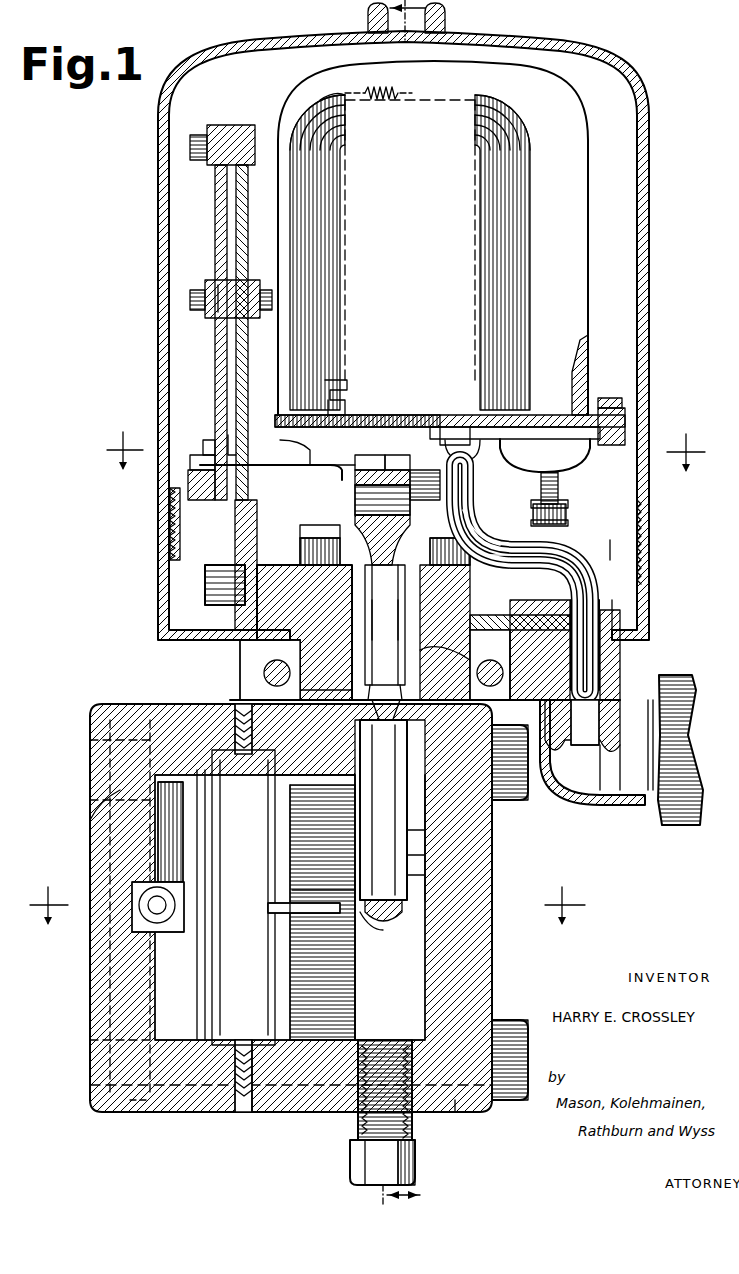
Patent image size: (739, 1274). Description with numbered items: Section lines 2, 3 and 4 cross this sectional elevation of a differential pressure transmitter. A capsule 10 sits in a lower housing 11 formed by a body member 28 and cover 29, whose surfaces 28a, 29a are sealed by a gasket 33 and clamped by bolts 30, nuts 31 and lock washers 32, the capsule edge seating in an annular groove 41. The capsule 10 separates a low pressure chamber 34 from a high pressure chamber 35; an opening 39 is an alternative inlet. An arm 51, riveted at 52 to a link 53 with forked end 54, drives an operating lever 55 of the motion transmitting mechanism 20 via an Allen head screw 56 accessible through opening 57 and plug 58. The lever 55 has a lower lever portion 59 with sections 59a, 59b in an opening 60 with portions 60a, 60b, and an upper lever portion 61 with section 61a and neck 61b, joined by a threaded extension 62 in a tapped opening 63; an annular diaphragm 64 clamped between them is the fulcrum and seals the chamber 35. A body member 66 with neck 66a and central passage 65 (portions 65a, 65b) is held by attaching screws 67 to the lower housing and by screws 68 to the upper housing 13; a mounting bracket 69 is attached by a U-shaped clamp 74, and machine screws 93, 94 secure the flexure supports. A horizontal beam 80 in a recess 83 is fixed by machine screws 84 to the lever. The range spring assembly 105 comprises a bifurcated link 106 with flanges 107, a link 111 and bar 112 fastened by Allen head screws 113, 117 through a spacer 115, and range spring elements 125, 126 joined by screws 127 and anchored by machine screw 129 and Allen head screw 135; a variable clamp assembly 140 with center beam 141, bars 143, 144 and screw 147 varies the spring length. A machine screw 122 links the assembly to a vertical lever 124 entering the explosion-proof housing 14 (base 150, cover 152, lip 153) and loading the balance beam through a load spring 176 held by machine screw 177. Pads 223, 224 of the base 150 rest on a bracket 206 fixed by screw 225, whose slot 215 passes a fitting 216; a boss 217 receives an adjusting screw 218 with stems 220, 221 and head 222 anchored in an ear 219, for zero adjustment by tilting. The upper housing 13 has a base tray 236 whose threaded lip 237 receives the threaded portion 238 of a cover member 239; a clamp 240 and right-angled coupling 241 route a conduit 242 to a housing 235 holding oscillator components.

The section line 2- 2 is at (392, 602).
The section line 3- 3 is at (399, 452).
The section line 4- 4 is at (306, 910).
The differential pressure responsive capsule 10 is at (275, 838).
The lower housing 11 is at (496, 879).
The upper housing 13 is at (640, 300).
The explosion-proof housing 14 is at (592, 225).
The motion transmitting mechanism 20 is at (462, 500).
The body member 28 is at (482, 912).
The adjacent surface of body member 28a is at (252, 1112).
The cover 29 is at (100, 830).
The adjacent surface of cover 29a is at (215, 1112).
The bolts 30 is at (95, 740).
The nuts 31 is at (500, 802).
The lock washers 32 is at (458, 1105).
The annular gasket 33 is at (242, 1112).
The first pressure chamber 34 is at (171, 832).
The second pressure chamber 35 is at (322, 912).
The opening 39 is at (447, 632).
The annular groove 41 is at (205, 1112).
The arm 51 is at (300, 913).
The rivet connection 52 is at (340, 905).
The link 53 is at (330, 913).
The forked end 54 is at (403, 925).
The operating lever 55 is at (409, 835).
The Allen head screw 56 is at (378, 930).
The opening 57 is at (385, 1040).
The removable plug 58 is at (416, 1162).
The lower lever portion 59 is at (412, 882).
The large diameter section 59a is at (415, 858).
The smaller diameter section 59b is at (430, 672).
The opening 60 is at (426, 790).
The large diameter portion 60a is at (315, 789).
The small diameter portion 60b is at (345, 700).
The upper lever portion 61 is at (365, 545).
The large diameter section 61a is at (480, 615).
The neck 61b is at (374, 685).
The threaded axial extension 62 is at (383, 810).
The tapped opening 63 is at (358, 805).
The sealing diaphragm 64 is at (478, 645).
The central passage 65 is at (355, 610).
The narrow portion 65a is at (390, 660).
The larger diameter portion 65b is at (352, 618).
The body member 66 is at (304, 632).
The neck 66a is at (200, 688).
The attaching screws 67 is at (300, 553).
The screws 68 is at (262, 660).
The mounting bracket 69 is at (234, 690).
The U-shaped clamp 74 is at (263, 675).
The horizontal beam 80 is at (398, 459).
The recess 83 is at (355, 500).
The machine screws 84 is at (452, 485).
The machine screw 93 is at (310, 540).
The machine screw 94 is at (485, 540).
The range spring assembly 105 is at (272, 98).
The bifurcated link 106 is at (355, 480).
The depending flanges 107 is at (435, 485).
The link 111 is at (290, 466).
The horizontal bar 112 is at (212, 505).
The Allen head screws 113 is at (210, 440).
The spacer 115 is at (198, 460).
The Allen head screws 117 is at (232, 450).
The machine screw 122 is at (370, 478).
The vertical lever 124 is at (338, 242).
The range spring element 125 is at (216, 184).
The range spring element 126 is at (240, 194).
The Allen head screws 127 is at (192, 142).
The machine screw 129 is at (188, 484).
The Allen head screw 135 is at (211, 594).
The variable clamp assembly 140 is at (207, 250).
The center beam 141 is at (232, 272).
The horizontal bar 143 is at (205, 325).
The horizontal bar 144 is at (252, 318).
The adjustable Allen head screw 147 is at (205, 288).
The base portion 150 is at (572, 400).
The cup-shaped cover 152 is at (588, 310).
The annular lip 153 is at (272, 421).
The linear load spring 176 is at (380, 94).
The machine screw 177 is at (340, 87).
The bracket 206 is at (455, 432).
The elongated slot 215 is at (515, 433).
The fitting 216 is at (446, 432).
The raised boss 217 is at (580, 462).
The adjusting screw 218 is at (566, 502).
The ear 219 is at (565, 600).
The stem portion 220 is at (560, 486).
The stem portion 221 is at (572, 526).
The turning head 222 is at (570, 508).
The mounting pad 223 is at (308, 452).
The mounting pad 224 is at (628, 425).
The machine screw 225 is at (610, 396).
The housing 235 is at (672, 826).
The base tray 236 is at (632, 605).
The externally threaded lip 237 is at (642, 542).
The internally threaded portion 238 is at (650, 512).
The cup-shaped cover member 239 is at (650, 262).
The clamp 240 is at (600, 735).
The right-angled coupling member 241 is at (605, 810).
The conduit 242 is at (590, 600).